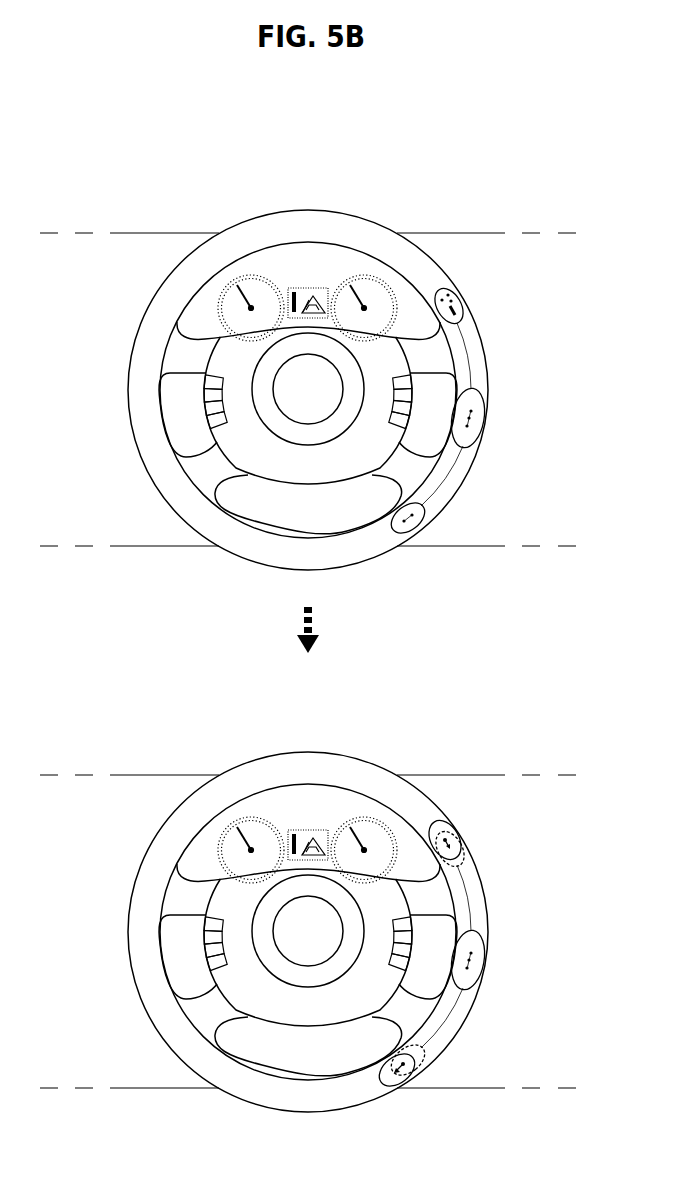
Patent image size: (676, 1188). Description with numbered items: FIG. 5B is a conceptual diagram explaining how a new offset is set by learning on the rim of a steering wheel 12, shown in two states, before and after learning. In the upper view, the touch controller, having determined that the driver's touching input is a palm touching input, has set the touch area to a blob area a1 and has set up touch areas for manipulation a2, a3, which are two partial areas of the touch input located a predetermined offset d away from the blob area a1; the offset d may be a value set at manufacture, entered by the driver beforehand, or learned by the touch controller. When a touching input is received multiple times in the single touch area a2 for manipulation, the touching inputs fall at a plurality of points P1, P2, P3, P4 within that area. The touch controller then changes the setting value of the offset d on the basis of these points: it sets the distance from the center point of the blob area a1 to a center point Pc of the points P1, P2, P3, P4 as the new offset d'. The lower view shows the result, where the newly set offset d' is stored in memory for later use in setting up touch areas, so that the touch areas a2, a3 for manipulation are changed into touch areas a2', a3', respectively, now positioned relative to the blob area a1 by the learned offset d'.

The steering wheel 12 is at (366, 199).
The point at which the touching input has been received P1 is at (449, 293).
The point at which the touching input has been received P2 is at (442, 298).
The point at which the touching input has been received P3 is at (453, 300).
The point at which the touching input has been received P4 is at (447, 311).
The blob area a1 is at (484, 391).
The touch area for manipulation a2 is at (475, 578).
The touch area for manipulation a3 is at (387, 784).
The changed touch area for manipulation a2' is at (458, 827).
The changed touch area for manipulation a3' is at (386, 1092).
The center point of the plurality of points Pc is at (449, 841).
The predetermined offset d is at (442, 476).
The new offset d' is at (456, 685).